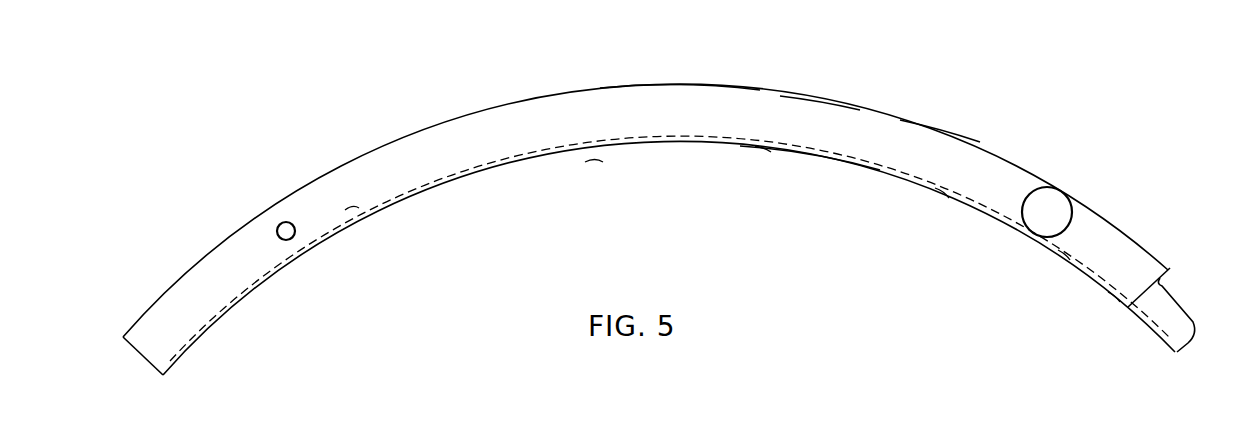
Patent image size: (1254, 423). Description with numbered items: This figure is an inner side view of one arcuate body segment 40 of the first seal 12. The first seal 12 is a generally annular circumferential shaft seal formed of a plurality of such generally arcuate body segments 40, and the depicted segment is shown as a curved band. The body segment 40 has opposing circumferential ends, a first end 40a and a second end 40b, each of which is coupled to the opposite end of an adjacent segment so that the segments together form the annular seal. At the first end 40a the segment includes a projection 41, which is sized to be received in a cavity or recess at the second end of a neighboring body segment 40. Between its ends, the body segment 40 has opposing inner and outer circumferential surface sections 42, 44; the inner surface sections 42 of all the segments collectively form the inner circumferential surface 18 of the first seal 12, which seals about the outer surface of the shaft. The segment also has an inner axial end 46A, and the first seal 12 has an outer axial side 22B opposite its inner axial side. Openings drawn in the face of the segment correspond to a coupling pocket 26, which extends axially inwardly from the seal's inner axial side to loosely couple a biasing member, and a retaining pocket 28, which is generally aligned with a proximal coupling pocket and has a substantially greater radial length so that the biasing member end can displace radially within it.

The first seal 12 is at (404, 72).
The arcuate body segment 40 is at (523, 101).
The first circumferential end 40a is at (1186, 341).
The second circumferential end 40b is at (138, 353).
The projection 41 is at (1171, 317).
The inner circumferential surface section 42 is at (812, 151).
The outer circumferential surface section 44 is at (723, 83).
The inner circumferential surface 18 is at (648, 148).
The outer axial side 22B is at (816, 104).
The coupling pocket 26 is at (286, 227).
The retaining pocket 28 is at (1050, 207).
The inner axial end 46A is at (933, 140).